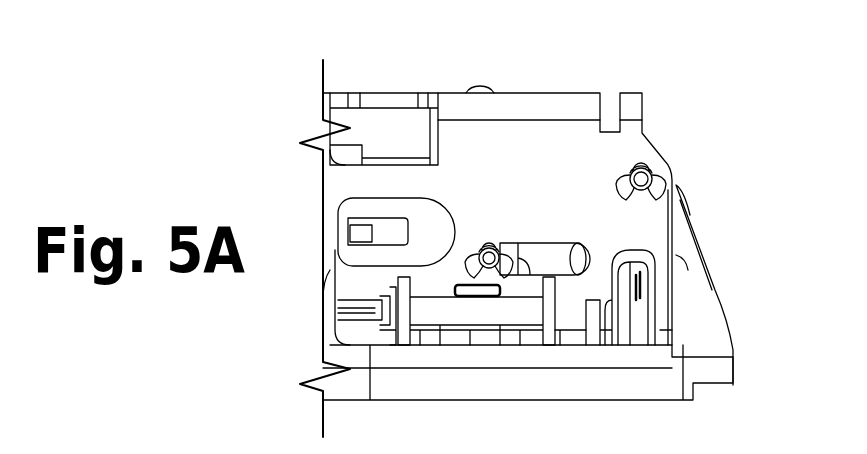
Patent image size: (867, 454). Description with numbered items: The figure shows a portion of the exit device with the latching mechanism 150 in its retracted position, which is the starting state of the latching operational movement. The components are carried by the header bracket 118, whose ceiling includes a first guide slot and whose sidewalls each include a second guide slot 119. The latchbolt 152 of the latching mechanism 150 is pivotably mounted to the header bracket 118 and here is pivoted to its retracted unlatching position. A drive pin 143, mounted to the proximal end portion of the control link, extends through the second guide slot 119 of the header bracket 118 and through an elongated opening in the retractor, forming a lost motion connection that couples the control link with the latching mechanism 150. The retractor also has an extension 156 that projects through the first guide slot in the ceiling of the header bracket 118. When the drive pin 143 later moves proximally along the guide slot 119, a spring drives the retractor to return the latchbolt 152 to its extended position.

The latching mechanism 150 is at (716, 120).
The header bracket 118 is at (578, 93).
The extension 156 is at (480, 92).
The drive pin 143 is at (489, 257).
The second guide slot 119 is at (540, 245).
The latchbolt 152 is at (700, 238).